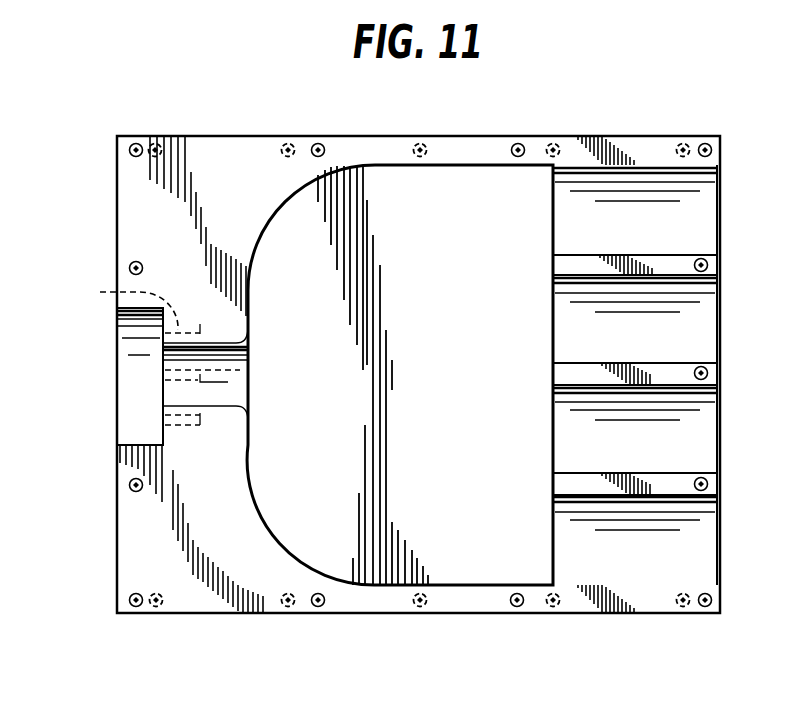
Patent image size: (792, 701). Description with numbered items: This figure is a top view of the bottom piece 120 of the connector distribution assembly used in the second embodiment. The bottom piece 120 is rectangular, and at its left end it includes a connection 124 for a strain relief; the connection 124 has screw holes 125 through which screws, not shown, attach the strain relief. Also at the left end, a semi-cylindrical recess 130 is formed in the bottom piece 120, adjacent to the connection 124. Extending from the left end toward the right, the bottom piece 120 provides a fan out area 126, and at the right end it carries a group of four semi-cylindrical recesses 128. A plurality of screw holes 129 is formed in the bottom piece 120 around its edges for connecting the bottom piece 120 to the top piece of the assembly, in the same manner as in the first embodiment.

The bottom piece 120 is at (207, 107).
The connection 124 is at (140, 420).
The screw holes 125 is at (116, 305).
The fan out area 126 is at (322, 540).
The semi-cylindrical recesses 128 is at (695, 220).
The screw holes 129 is at (130, 269).
The semi-cylindrical recess 130 is at (177, 395).